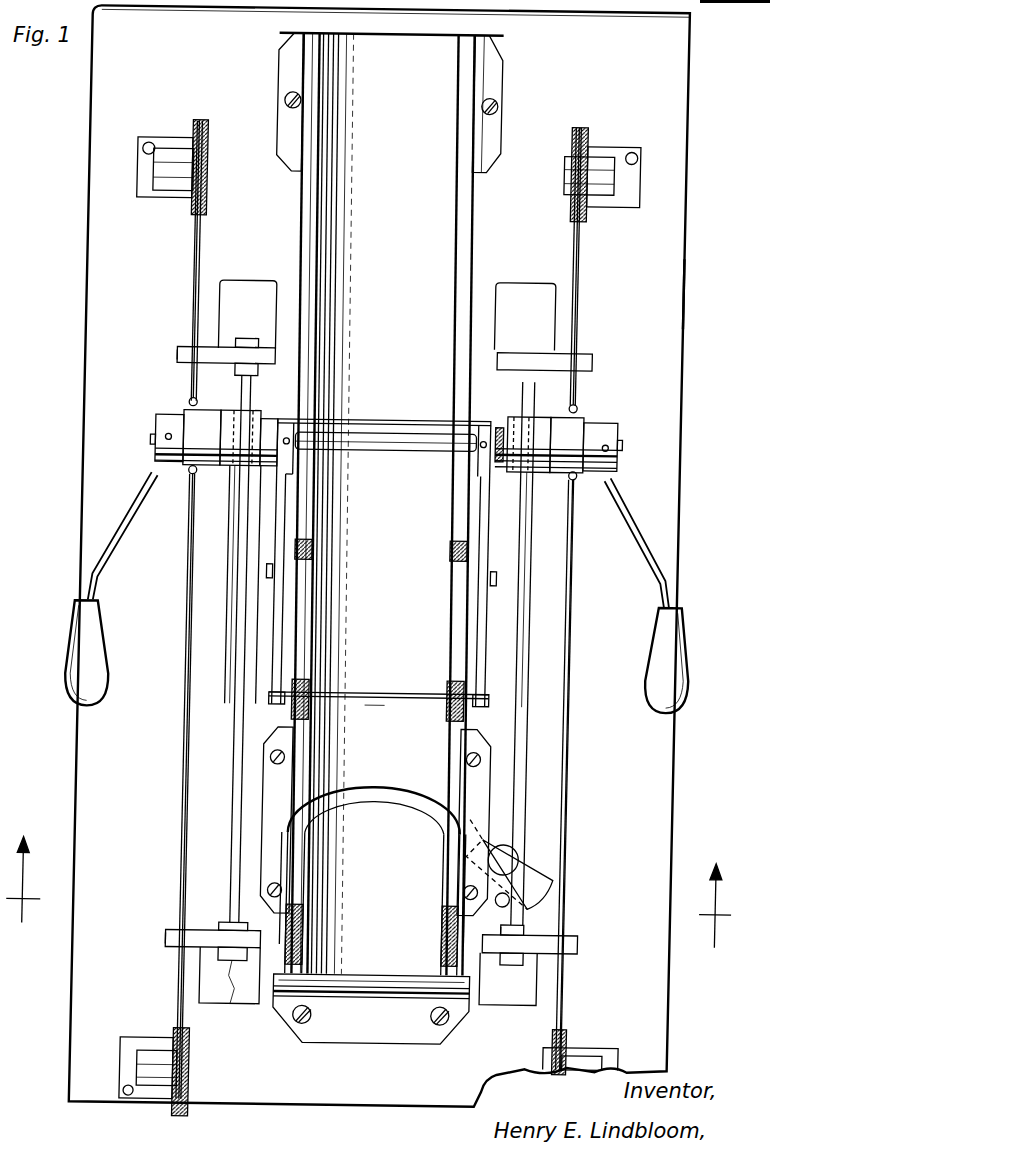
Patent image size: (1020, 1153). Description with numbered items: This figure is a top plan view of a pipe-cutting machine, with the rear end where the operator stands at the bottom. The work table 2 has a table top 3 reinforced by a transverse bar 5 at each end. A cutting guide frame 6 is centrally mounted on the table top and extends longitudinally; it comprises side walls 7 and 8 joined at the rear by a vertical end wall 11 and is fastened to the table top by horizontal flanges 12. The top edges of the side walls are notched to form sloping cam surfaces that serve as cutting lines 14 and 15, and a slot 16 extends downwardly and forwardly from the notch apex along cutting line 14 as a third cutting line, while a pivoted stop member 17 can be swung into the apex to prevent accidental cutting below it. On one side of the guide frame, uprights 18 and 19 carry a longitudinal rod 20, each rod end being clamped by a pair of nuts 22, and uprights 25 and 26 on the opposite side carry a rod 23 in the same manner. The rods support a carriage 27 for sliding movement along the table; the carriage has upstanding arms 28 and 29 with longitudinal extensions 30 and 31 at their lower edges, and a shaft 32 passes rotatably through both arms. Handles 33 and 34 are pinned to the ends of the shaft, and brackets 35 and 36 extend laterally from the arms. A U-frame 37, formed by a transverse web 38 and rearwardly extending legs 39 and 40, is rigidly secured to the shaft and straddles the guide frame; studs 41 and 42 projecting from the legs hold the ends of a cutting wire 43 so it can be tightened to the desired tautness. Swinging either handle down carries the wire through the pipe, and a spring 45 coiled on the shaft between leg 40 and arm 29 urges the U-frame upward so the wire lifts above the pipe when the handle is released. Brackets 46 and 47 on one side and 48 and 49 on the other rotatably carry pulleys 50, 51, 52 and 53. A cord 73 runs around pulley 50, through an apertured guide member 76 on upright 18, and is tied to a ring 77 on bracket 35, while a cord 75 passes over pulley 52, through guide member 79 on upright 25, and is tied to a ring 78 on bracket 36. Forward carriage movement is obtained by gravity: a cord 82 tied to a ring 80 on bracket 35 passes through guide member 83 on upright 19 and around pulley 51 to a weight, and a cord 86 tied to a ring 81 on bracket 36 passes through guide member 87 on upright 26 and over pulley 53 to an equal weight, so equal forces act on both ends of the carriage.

The work table 2 is at (700, 369).
The table top 3 is at (681, 281).
The transverse bar 5 is at (369, 906).
The cutting guide frame 6 is at (374, 716).
The side wall 7 is at (324, 856).
The side wall 8 is at (461, 902).
The vertical end wall 11 is at (376, 970).
The horizontal flanges 12 is at (289, 69).
The cutting line 14 is at (317, 901).
The cutting line 15 is at (315, 764).
The slot 16 is at (365, 792).
The stop member 17 is at (554, 873).
The upright 18 is at (228, 930).
The upright 19 is at (233, 352).
The longitudinal rod 20 is at (250, 610).
The nuts 22 is at (252, 335).
The longitudinal rod 23 is at (533, 653).
The upright 25 is at (541, 933).
The upright 26 is at (551, 341).
The carriage 27 is at (232, 502).
The upstanding arm 28 is at (259, 412).
The upstanding arm 29 is at (539, 410).
The longitudinal extension 30 is at (243, 512).
The longitudinal extension 31 is at (538, 513).
The shaft 32 is at (386, 445).
The handle 33 is at (117, 562).
The handle 34 is at (673, 561).
The bracket 35 is at (206, 422).
The bracket 36 is at (574, 422).
The U-frame 37 is at (352, 409).
The transverse web 38 is at (407, 413).
The leg 39 is at (300, 596).
The leg 40 is at (488, 604).
The stud 41 is at (278, 568).
The stud 42 is at (511, 573).
The cutting wire 43 is at (390, 685).
The spring 45 is at (508, 420).
The upstanding bracket 46 is at (193, 1038).
The upstanding bracket 47 is at (187, 193).
The upstanding bracket 48 is at (595, 1047).
The upstanding bracket 49 is at (596, 137).
The pulley 50 is at (214, 1107).
The pulley 51 is at (211, 197).
The pulley 52 is at (576, 1028).
The pulley 53 is at (577, 202).
The cord 73 is at (201, 738).
The cord 75 is at (586, 719).
The apertured guide member 76 is at (186, 938).
The ring 77 is at (203, 474).
The ring 78 is at (584, 476).
The apertured guide member 79 is at (598, 932).
The ring 80 is at (200, 395).
The ring 81 is at (583, 396).
The cord 82 is at (206, 240).
The apertured guide member 83 is at (186, 350).
The cord 86 is at (587, 235).
The apertured guide member 87 is at (588, 347).